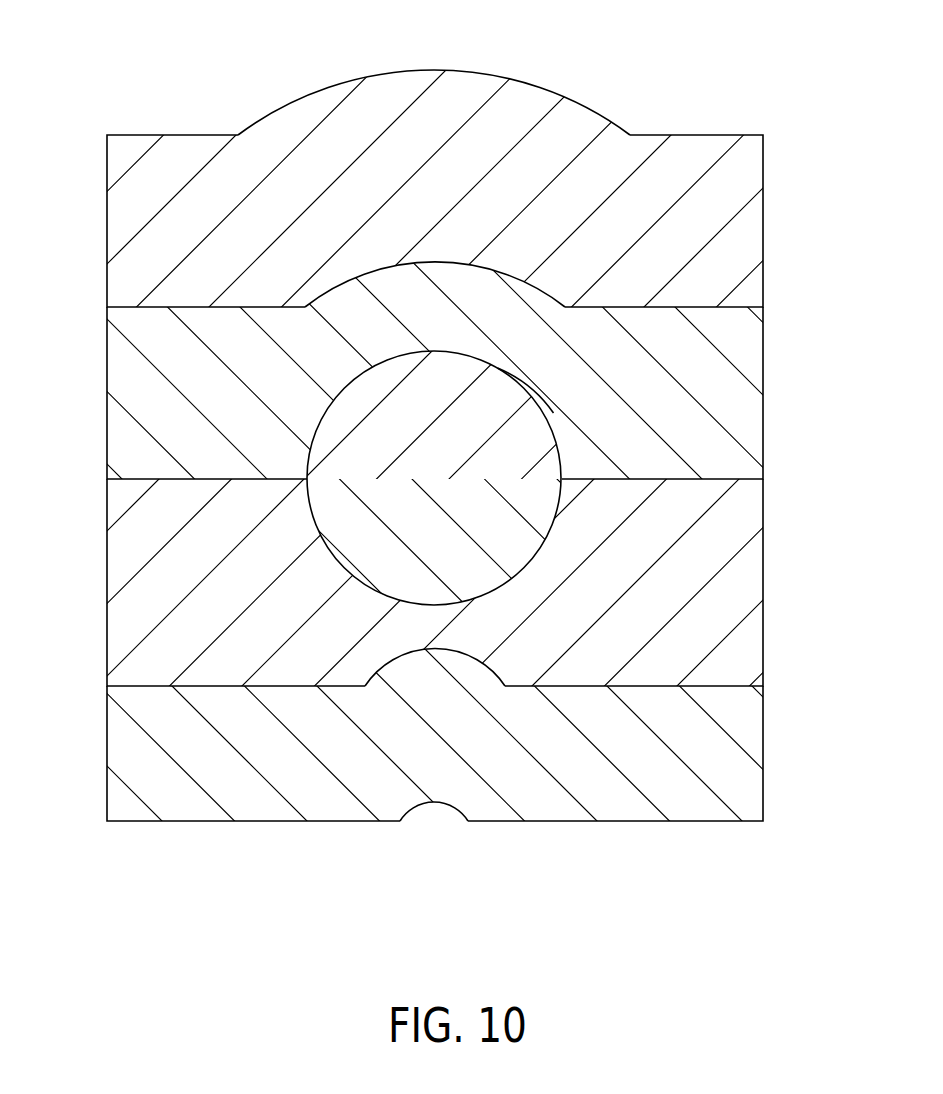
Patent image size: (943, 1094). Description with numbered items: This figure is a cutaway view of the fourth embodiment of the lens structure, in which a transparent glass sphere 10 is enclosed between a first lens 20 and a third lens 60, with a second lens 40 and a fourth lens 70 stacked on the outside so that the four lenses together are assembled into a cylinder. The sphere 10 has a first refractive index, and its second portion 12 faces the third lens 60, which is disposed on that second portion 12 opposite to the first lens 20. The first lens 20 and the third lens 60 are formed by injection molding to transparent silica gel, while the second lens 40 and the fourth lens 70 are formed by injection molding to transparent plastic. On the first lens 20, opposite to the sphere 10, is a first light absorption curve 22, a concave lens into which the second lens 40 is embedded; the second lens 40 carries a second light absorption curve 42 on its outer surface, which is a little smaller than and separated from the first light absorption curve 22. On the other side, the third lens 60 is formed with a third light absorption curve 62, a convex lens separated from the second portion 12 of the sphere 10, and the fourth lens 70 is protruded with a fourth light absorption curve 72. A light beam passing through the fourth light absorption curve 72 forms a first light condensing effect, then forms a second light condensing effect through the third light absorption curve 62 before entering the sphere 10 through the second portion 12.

The sphere 10 is at (513, 459).
The second portion 12 is at (547, 417).
The first lens 20 is at (747, 513).
The first light absorption curve 22 is at (380, 670).
The second lens 40 is at (168, 810).
The second light absorption curve 42 is at (435, 802).
The third lens 60 is at (124, 364).
The third light absorption curve 62 is at (373, 272).
The fourth lens 70 is at (122, 208).
The fourth light absorption curve 72 is at (481, 72).